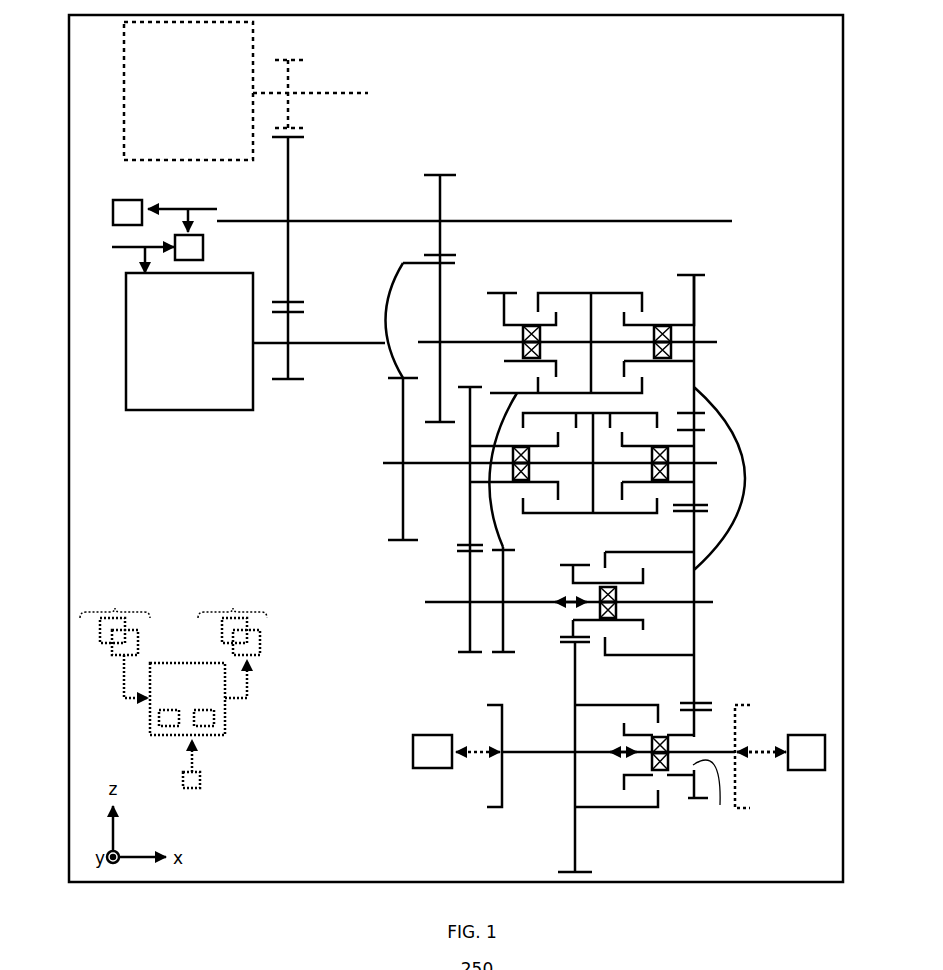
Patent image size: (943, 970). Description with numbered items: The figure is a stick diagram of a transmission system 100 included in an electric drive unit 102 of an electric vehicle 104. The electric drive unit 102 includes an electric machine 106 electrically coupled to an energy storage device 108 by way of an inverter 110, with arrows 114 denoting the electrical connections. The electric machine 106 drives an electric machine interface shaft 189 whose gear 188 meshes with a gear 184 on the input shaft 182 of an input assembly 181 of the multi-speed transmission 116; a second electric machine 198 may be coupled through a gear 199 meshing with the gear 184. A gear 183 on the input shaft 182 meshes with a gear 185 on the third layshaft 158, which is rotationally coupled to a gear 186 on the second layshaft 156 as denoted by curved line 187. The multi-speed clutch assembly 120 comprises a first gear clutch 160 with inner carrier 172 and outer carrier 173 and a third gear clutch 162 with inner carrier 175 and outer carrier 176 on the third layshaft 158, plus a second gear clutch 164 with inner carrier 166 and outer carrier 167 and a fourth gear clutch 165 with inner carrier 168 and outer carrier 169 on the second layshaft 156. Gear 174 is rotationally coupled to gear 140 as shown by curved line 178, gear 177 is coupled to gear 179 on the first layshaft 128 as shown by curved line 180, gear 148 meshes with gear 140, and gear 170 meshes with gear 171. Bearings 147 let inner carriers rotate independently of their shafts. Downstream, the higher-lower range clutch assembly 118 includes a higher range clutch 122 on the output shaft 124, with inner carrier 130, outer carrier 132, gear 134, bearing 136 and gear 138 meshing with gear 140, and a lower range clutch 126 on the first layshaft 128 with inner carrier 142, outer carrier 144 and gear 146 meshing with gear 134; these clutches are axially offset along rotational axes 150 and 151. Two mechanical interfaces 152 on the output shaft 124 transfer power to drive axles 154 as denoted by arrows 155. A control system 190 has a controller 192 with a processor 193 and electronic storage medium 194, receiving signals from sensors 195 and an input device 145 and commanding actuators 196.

The transmission system 100 is at (731, 60).
The electric drive unit 102 is at (100, 106).
The electric vehicle 104 is at (69, 45).
The electric machine 106 is at (126, 305).
The energy storage device 108 is at (113, 218).
The inverter 110 is at (205, 247).
The arrows 114 is at (162, 235).
The multi-speed transmission 116 is at (746, 142).
The higher-lower range clutch assembly 118 is at (365, 690).
The multi-speed clutch assembly 120 is at (335, 460).
The higher range clutch 122 is at (667, 845).
The output shaft 124 is at (538, 750).
The lower range clutch 126 is at (591, 553).
The first layshaft 128 is at (425, 604).
The inner carrier 130 is at (714, 795).
The outer carrier 132 is at (620, 808).
The gear 134 is at (575, 870).
The bearing 136 is at (650, 745).
The gear 138 is at (688, 800).
The gear 140 is at (705, 703).
The inner carrier 142 is at (633, 620).
The outer carrier 144 is at (655, 657).
The input device 145 is at (200, 780).
The gear 146 is at (565, 565).
The bearings 147 is at (672, 350).
The gear 148 is at (702, 505).
The rotational axis 150 is at (628, 755).
The rotational axis 151 is at (566, 606).
The mechanical interfaces 152 is at (490, 778).
The drive axles 154 is at (413, 750).
The arrows 155 is at (478, 748).
The second layshaft 156 is at (383, 463).
The third layshaft 158 is at (708, 342).
The first gear clutch 160 is at (620, 268).
The third gear clutch 162 is at (571, 262).
The second gear clutch 164 is at (650, 403).
The fourth gear clutch 165 is at (530, 403).
The inner carrier 166 is at (663, 447).
The outer carrier 167 is at (590, 463).
The inner carrier 168 is at (518, 447).
The outer carrier 169 is at (582, 472).
The gear 170 is at (470, 387).
The gear 171 is at (460, 548).
The inner carrier 172 is at (655, 326).
The outer carrier 173 is at (612, 293).
The gear 174 is at (700, 275).
The inner carrier 175 is at (530, 325).
The outer carrier 176 is at (575, 293).
The gear 177 is at (504, 293).
The curved line 178 is at (745, 470).
The gear 179 is at (503, 654).
The curved line 180 is at (470, 446).
The input assembly 181 is at (520, 198).
The input shaft 182 is at (715, 221).
The gear 183 is at (438, 175).
The gear 184 is at (300, 302).
The gear 185 is at (435, 422).
The gear 186 is at (403, 542).
The curved line 187 is at (385, 352).
The gear 188 is at (297, 382).
The electric machine interface shaft 189 is at (316, 345).
The control system 190 is at (165, 580).
The controller 192 is at (187, 699).
The processor 193 is at (159, 718).
The electronic storage medium 194 is at (214, 718).
The sensors 195 is at (115, 641).
The actuators 196 is at (232, 641).
The second electric machine 198 is at (124, 58).
The gear 199 is at (292, 60).